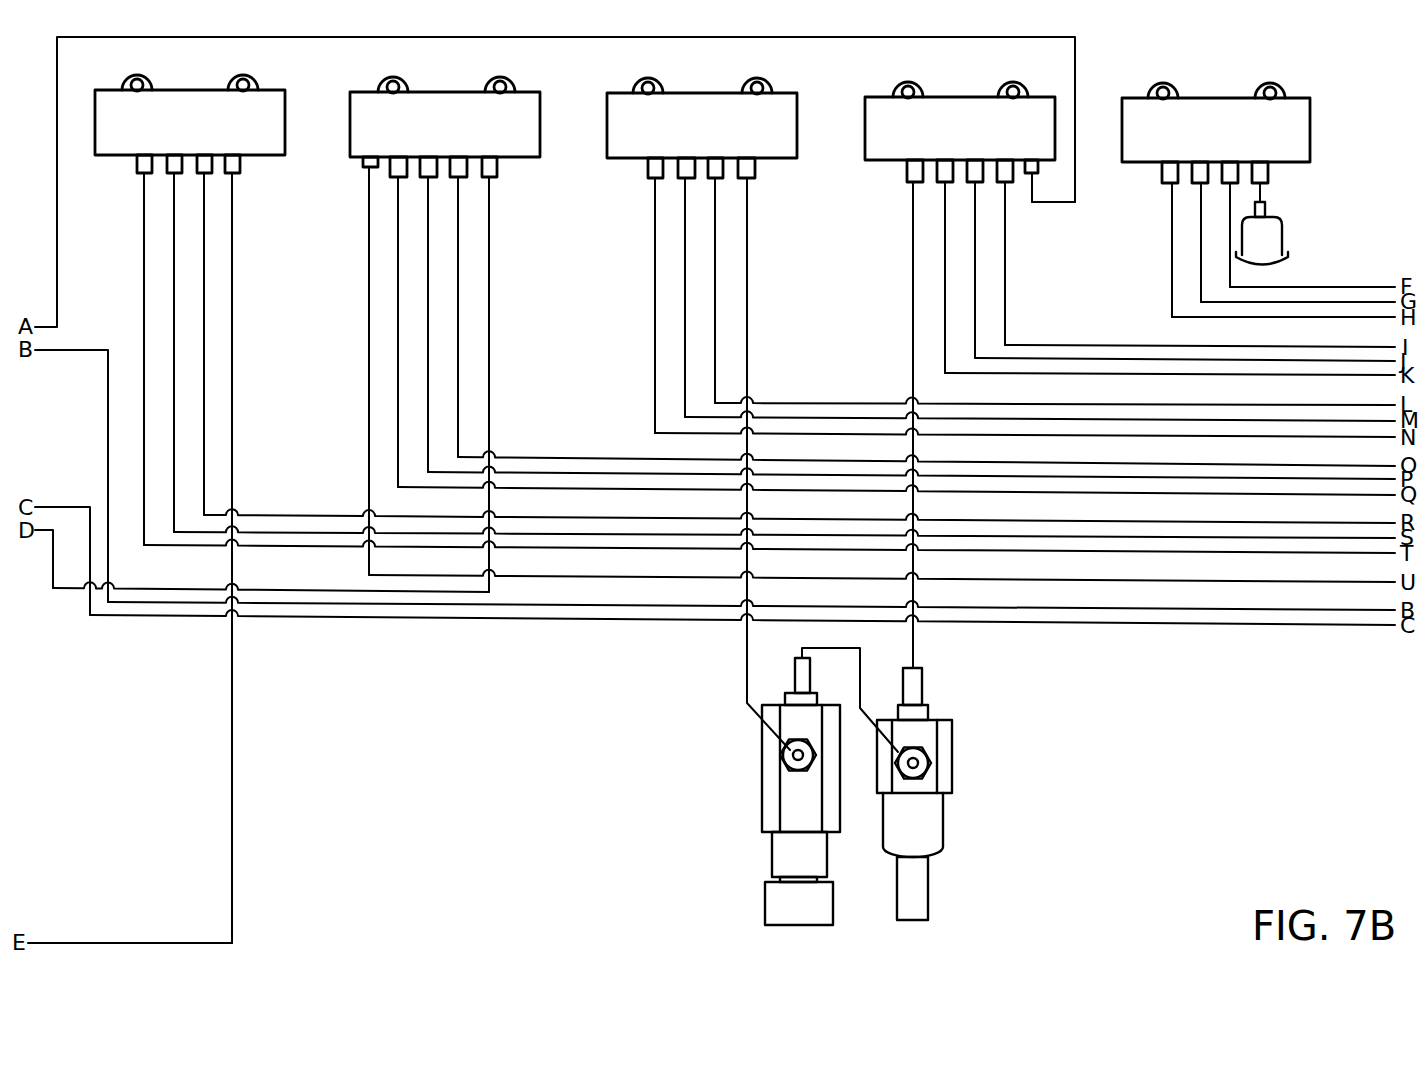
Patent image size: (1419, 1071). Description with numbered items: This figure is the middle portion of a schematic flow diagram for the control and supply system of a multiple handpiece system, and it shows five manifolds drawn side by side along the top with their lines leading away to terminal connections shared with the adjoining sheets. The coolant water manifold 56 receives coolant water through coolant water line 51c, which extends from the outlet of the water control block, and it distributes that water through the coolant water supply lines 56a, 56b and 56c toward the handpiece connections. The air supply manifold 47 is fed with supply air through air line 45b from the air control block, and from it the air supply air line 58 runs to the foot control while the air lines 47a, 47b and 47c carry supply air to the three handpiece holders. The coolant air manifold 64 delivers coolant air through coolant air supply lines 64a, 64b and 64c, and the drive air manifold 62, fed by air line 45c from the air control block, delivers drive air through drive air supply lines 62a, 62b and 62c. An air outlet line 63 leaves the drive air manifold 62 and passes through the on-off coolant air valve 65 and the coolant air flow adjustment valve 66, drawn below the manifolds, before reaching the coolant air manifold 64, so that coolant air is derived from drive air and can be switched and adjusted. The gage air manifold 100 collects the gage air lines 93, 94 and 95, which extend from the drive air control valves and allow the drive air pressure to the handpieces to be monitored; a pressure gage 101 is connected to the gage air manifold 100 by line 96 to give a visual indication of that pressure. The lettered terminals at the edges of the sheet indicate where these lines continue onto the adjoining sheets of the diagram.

The coolant water manifold 56 is at (187, 107).
The coolant water supply line 56a is at (144, 233).
The coolant water supply line 56b is at (174, 303).
The coolant water supply line 56c is at (204, 230).
The coolant water line 51c is at (232, 287).
The air supply manifold 47 is at (443, 108).
The air supply air line 58 is at (369, 233).
The air line 47a is at (398, 308).
The air line 47b is at (428, 381).
The air line 47c is at (458, 311).
The air line 45b is at (489, 237).
The coolant air manifold 64 is at (698, 110).
The coolant air supply line 64a is at (655, 237).
The coolant air supply line 64b is at (685, 311).
The coolant air supply line 64c is at (715, 312).
The air outlet line 63 is at (747, 238).
The drive air manifold 62 is at (955, 113).
The drive air supply line 62a is at (945, 247).
The drive air supply line 62b is at (975, 285).
The drive air supply line 62c is at (1006, 281).
The air line 45c is at (1060, 203).
The gage air manifold 100 is at (1213, 112).
The gage air line 93 is at (1172, 200).
The gage air line 94 is at (1201, 245).
The gage air line 95 is at (1172, 317).
The line 96 is at (1262, 187).
The pressure gage 101 is at (1270, 238).
The coolant air flow adjustment valve 66 is at (773, 783).
The on-off coolant air valve 65 is at (925, 818).